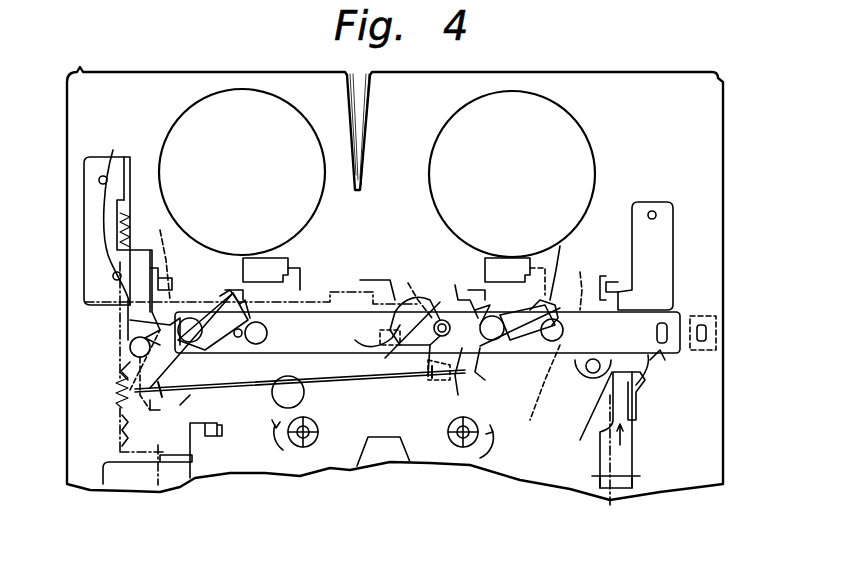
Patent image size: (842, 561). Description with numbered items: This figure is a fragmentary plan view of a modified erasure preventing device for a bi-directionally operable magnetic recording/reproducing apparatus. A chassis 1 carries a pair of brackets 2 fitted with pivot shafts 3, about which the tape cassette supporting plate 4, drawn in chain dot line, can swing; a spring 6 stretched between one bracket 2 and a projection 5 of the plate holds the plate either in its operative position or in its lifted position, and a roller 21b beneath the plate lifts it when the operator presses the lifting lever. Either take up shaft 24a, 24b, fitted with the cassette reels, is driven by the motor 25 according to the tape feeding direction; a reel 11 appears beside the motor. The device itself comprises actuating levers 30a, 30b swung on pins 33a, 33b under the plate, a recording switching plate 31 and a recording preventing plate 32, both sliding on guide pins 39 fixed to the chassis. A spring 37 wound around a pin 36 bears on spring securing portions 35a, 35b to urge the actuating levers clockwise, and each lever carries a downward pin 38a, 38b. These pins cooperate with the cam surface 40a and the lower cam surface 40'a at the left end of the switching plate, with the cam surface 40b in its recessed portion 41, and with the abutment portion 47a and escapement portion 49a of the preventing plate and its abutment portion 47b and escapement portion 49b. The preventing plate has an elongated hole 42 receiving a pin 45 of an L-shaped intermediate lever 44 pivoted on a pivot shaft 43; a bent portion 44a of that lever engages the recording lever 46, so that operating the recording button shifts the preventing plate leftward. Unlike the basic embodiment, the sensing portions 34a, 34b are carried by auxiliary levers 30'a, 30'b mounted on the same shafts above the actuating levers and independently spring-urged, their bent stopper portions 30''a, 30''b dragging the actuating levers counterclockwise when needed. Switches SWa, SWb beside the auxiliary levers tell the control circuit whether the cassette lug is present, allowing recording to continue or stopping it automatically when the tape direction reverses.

The chassis 1 is at (702, 485).
The bracket 2 is at (92, 154).
The pivot shaft 3 is at (152, 262).
The tape cassette supporting plate 4 is at (632, 478).
The projection 5 is at (116, 452).
The spring 6 is at (116, 402).
The reel 11 is at (306, 128).
The motor 25 is at (584, 143).
The roller 21b is at (212, 437).
The take up shaft 24a is at (318, 432).
The take up shaft 24b is at (478, 429).
The actuating lever 30a is at (185, 409).
The auxiliary lever 30'a is at (184, 244).
The bent stopper portion 30''a is at (252, 251).
The actuating lever 30b is at (435, 356).
The auxiliary lever 30'b is at (438, 278).
The bent stopper portion 30''b is at (558, 249).
The recording switching plate 31 is at (680, 348).
The recording preventing plate 32 is at (364, 376).
The pin 33a is at (228, 290).
The pin 33b is at (468, 290).
The sensing portion 34a is at (310, 271).
The sensing portion 34b is at (558, 279).
The spring securing portion 35a is at (132, 430).
The spring securing portion 35b is at (403, 463).
The pin 36 is at (305, 393).
The spring 37 is at (206, 402).
The pin 38a is at (125, 368).
The pin 38b is at (395, 290).
The guide pin 39 is at (268, 340).
The cam surface 40a is at (130, 348).
The cam surface 40'a is at (109, 383).
The cam surface 40b is at (378, 341).
The recessed portion 41 is at (430, 376).
The elongated hole 42 is at (571, 392).
The pivot shaft 43 is at (588, 378).
The intermediate lever 44 is at (650, 376).
The bent portion 44a is at (648, 402).
The pin 45 is at (590, 280).
The recording lever 46 is at (633, 450).
The abutment portion 47a is at (128, 328).
The abutment portion 47b is at (455, 288).
The escapement portion 49a is at (176, 358).
The escapement portion 49b is at (499, 373).
The switch SWa is at (254, 258).
The switch SWb is at (506, 258).